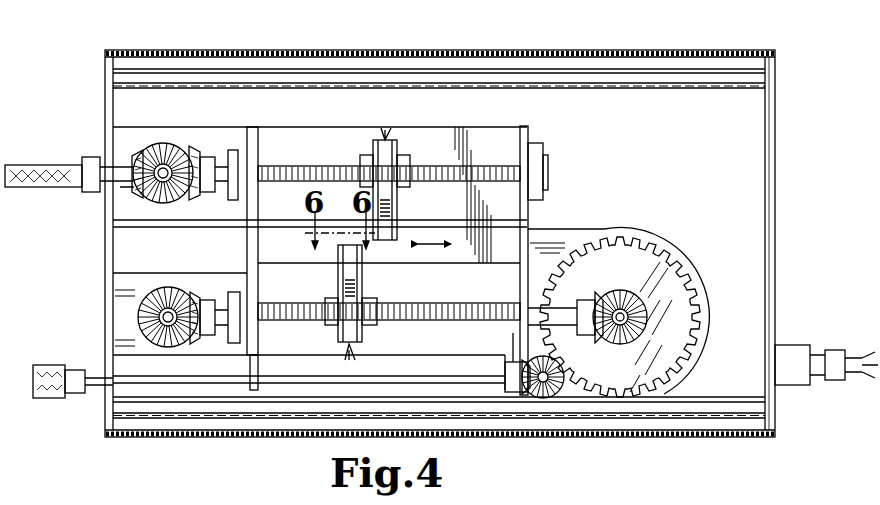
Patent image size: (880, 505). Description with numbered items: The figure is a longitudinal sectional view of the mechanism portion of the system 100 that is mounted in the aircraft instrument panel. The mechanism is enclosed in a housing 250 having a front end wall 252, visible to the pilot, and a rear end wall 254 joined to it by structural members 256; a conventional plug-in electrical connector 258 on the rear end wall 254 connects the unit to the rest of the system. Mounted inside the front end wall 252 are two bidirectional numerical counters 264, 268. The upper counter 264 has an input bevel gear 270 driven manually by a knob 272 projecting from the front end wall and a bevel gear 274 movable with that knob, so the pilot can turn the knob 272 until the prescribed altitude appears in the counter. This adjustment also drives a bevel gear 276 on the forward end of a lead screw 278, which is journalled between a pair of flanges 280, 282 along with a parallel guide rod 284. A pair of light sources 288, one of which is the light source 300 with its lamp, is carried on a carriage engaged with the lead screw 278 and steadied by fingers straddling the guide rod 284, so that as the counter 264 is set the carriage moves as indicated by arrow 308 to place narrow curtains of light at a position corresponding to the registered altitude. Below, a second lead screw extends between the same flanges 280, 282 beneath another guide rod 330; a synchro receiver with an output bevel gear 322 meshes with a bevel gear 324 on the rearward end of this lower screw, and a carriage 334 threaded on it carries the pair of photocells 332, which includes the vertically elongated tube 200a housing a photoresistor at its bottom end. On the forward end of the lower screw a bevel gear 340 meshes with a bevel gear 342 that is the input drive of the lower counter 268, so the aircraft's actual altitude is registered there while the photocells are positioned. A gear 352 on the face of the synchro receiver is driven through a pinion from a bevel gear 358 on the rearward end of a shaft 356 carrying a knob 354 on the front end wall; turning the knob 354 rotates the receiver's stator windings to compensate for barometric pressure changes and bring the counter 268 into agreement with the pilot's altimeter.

The housing assembly 100 is at (589, 47).
The housing 250 is at (345, 49).
The front end wall 252 is at (106, 266).
The rear end wall 254 is at (776, 225).
The structural members 256 is at (699, 86).
The electrical plug-in type connector 258 is at (792, 332).
The knob 272 is at (50, 164).
The bevel gear 274 is at (140, 190).
The bevel gear 270 is at (160, 152).
The numerical counter 264 is at (192, 135).
The bevel gear 276 is at (197, 152).
The flange 280 is at (260, 142).
The lead screw 278 is at (322, 165).
The pair of light sources 288 is at (406, 141).
The light source 300 is at (398, 207).
The guide rod 284 is at (494, 218).
The flange 282 is at (530, 131).
The arrow 308 is at (435, 250).
The guide rod 330 is at (492, 258).
The pair of photocells 332 is at (367, 299).
The carriage 334 is at (330, 320).
The vertically elongated tube 200a is at (362, 330).
The shaft 356 is at (462, 374).
The bevel gear 358 is at (546, 398).
The gear 352 is at (680, 255).
The bevel gear 324 is at (598, 293).
The bevel gear 322 is at (638, 313).
The bevel gear 342 is at (165, 290).
The bevel gear 340 is at (188, 300).
The numerical counter 268 is at (222, 277).
The knob 354 is at (48, 365).